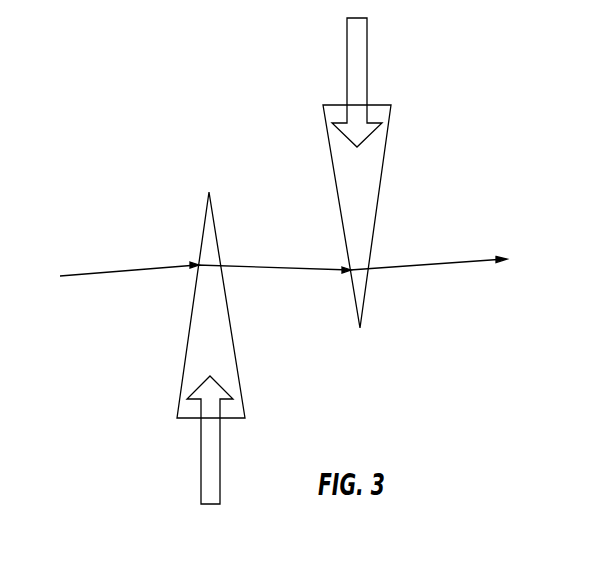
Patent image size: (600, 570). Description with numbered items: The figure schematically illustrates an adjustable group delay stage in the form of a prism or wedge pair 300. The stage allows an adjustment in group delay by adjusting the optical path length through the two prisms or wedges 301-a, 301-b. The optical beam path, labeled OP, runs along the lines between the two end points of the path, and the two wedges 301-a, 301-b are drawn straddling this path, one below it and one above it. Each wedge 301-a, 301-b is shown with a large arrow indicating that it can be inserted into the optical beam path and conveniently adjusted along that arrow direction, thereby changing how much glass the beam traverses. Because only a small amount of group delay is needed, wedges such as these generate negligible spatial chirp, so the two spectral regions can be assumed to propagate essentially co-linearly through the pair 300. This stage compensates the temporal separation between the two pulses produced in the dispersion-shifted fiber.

The prism or wedge pair 300 is at (300, 261).
The prism or wedge 301-a is at (187, 353).
The prism or wedge 301-b is at (389, 118).